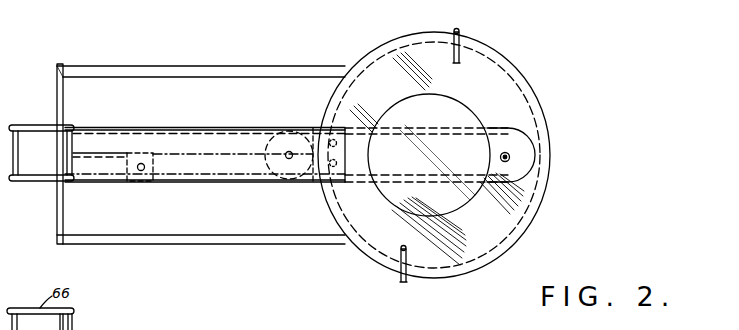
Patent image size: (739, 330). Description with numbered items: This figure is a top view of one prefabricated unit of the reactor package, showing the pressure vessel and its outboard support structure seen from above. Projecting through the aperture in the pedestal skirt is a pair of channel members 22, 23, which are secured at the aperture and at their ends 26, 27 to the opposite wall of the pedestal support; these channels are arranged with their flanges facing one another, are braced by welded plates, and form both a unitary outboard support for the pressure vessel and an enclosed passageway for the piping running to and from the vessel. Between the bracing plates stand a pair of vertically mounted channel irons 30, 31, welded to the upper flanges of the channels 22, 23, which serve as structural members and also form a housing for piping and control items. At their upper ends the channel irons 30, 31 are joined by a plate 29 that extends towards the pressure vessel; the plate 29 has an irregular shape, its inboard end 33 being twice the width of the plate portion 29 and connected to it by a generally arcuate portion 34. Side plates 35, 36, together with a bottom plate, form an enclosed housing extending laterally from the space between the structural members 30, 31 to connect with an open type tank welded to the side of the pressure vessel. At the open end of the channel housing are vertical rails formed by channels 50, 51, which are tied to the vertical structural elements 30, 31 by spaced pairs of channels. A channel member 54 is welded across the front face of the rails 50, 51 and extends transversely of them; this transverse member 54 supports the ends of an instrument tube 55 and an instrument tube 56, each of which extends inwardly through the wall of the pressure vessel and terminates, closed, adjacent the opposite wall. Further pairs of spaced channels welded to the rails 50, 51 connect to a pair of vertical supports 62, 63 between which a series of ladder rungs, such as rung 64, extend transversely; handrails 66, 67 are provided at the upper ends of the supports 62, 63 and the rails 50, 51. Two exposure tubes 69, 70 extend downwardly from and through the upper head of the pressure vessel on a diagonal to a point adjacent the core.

The channel member 22 is at (214, 183).
The channel member 23 is at (205, 127).
The end of channel member 26 is at (548, 130).
The end of channel member 27 is at (547, 178).
The plate 29 is at (193, 163).
The channel iron 30 is at (137, 183).
The channel iron 31 is at (145, 155).
The inboard end of plate 33 is at (336, 140).
The arcuate portion 34 is at (265, 137).
The side plate 35 is at (232, 154).
The side plate 36 is at (244, 183).
The vertical rail 50 is at (70, 183).
The vertical rail 51 is at (70, 126).
The channel member 54 is at (57, 217).
The instrument tube 55 is at (248, 245).
The instrument tube 56 is at (268, 67).
The vertical support 62 is at (15, 182).
The vertical support 63 is at (18, 125).
The ladder rung 64 is at (18, 152).
The handrail 66 is at (37, 181).
The handrail 67 is at (38, 126).
The exposure tube 69 is at (405, 282).
The exposure tube 70 is at (460, 42).